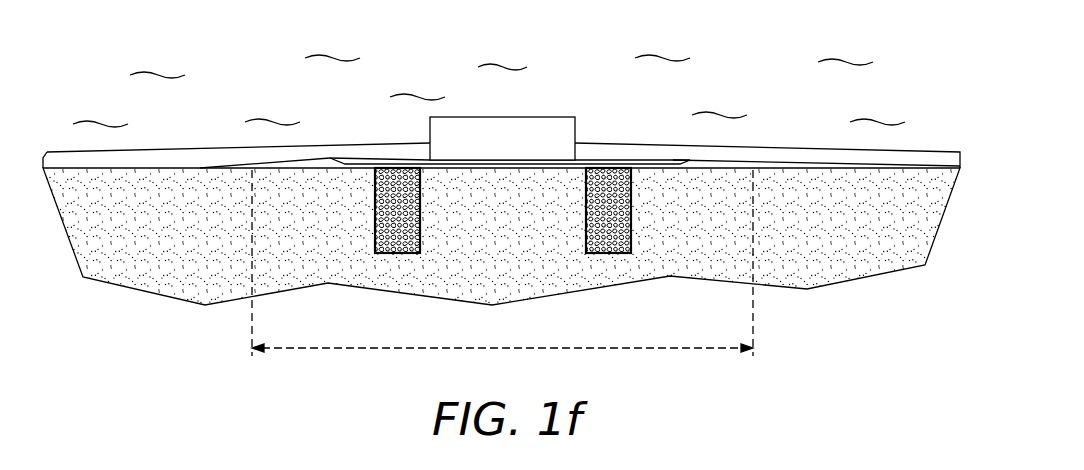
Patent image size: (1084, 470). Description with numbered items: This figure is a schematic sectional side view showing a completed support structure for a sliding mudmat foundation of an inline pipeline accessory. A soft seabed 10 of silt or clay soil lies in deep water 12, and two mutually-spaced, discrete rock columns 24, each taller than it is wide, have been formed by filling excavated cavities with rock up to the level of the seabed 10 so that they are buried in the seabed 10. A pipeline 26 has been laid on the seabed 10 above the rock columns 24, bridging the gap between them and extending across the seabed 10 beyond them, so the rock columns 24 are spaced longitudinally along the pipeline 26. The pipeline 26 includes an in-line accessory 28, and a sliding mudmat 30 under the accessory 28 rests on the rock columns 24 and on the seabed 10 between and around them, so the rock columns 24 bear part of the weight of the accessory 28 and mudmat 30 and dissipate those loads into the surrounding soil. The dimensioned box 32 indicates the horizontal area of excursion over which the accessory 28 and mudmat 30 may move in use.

The seabed 10 is at (868, 265).
The deep water 12 is at (254, 93).
The rock columns 24 is at (403, 247).
The pipeline 26 is at (787, 152).
The accessory 28 is at (551, 125).
The sliding mudmat 30 is at (641, 165).
The box 32 is at (666, 352).